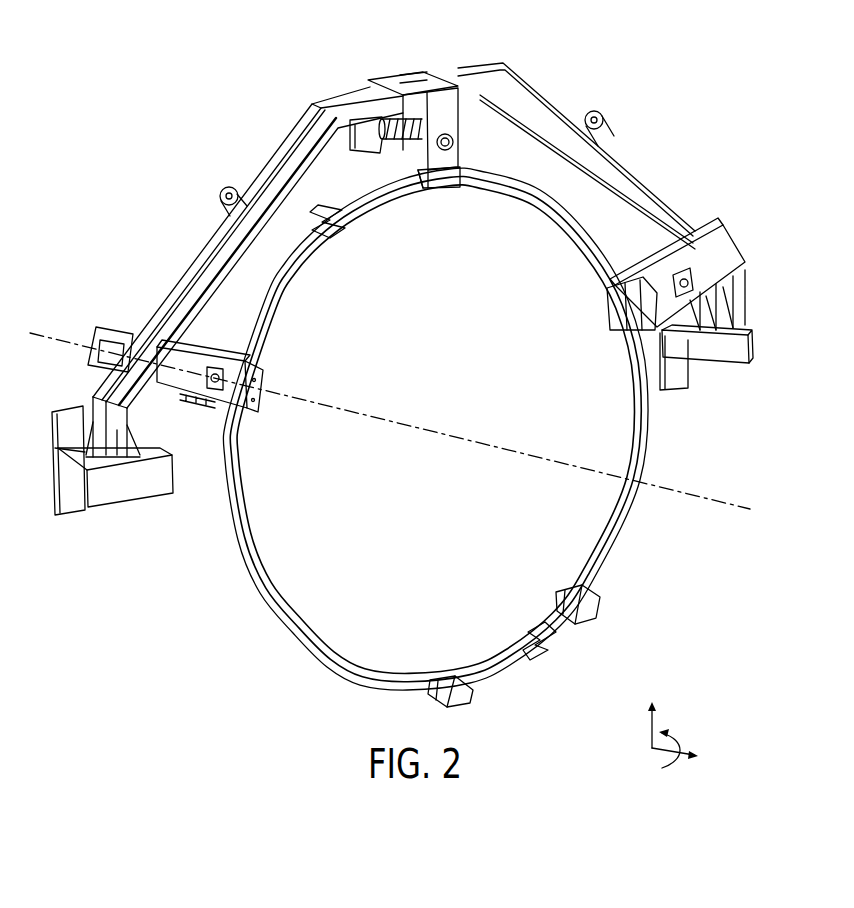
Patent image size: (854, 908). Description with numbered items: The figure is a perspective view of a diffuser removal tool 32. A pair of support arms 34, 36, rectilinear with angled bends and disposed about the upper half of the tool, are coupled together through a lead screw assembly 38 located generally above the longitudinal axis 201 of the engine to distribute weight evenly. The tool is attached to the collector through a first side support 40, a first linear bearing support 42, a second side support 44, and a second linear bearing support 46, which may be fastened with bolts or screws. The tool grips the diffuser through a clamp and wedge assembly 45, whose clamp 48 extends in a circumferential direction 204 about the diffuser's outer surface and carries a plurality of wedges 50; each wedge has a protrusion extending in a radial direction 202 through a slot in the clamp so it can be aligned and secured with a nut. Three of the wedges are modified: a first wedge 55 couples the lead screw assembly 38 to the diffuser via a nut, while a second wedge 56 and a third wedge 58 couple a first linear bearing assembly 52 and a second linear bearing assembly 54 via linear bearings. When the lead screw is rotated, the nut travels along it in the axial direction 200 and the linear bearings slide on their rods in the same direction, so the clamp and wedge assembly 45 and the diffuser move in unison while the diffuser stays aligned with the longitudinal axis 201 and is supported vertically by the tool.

The diffuser removal tool 32 is at (506, 28).
The support arm 34 is at (276, 153).
The support arm 36 is at (604, 151).
The lead screw assembly 38 is at (376, 67).
The first side support 40 is at (135, 497).
The first linear bearing support 42 is at (100, 372).
The second side support 44 is at (735, 360).
The clamp and wedge assembly 45 is at (624, 584).
The second linear bearing support 46 is at (628, 245).
The clamp 48 is at (300, 640).
The wedges 50 is at (561, 599).
The first linear bearing assembly 52 is at (204, 420).
The second linear bearing assembly 54 is at (738, 223).
The first wedge 55 is at (440, 190).
The second wedge 56 is at (262, 388).
The third wedge 58 is at (603, 308).
The axial direction 200 is at (670, 752).
The longitudinal axis 201 is at (667, 489).
The radial direction 202 is at (652, 723).
The circumferential direction 204 is at (678, 733).